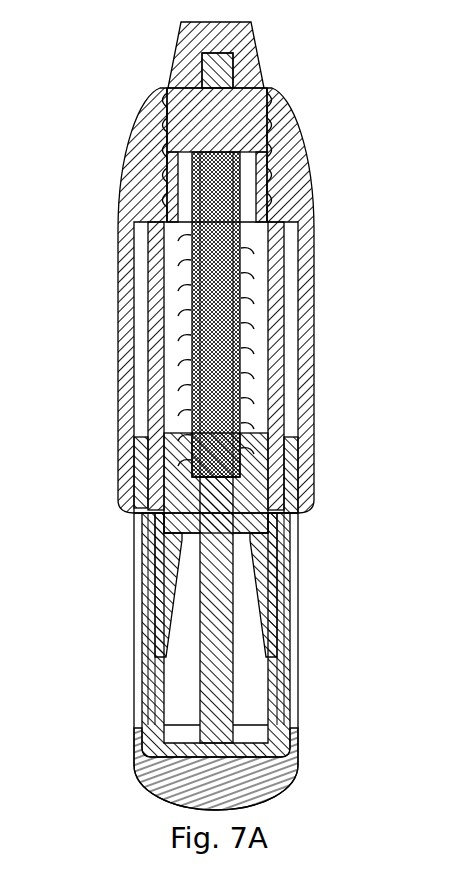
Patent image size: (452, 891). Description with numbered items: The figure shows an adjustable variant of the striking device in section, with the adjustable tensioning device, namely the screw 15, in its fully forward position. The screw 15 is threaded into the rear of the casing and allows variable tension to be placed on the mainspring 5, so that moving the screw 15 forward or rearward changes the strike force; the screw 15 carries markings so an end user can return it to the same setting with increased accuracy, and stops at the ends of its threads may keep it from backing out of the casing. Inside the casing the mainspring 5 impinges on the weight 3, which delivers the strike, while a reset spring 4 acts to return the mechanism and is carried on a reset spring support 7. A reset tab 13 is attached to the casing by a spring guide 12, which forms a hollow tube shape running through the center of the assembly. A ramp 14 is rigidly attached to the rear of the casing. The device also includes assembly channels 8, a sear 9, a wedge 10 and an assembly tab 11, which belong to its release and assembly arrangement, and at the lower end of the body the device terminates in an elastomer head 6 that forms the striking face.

The weight 3 is at (163, 470).
The reset spring 4 is at (237, 337).
The mainspring 5 is at (177, 337).
The elastomer head 6 is at (290, 785).
The reset spring support 7 is at (233, 649).
The assembly channels 8 is at (138, 707).
The sear 9 is at (177, 542).
The wedge 10 is at (268, 517).
The assembly tab 11 is at (297, 488).
The spring guide 12 is at (237, 381).
The reset tab 13 is at (285, 545).
The ramp 14 is at (147, 288).
The screw 15 is at (307, 168).